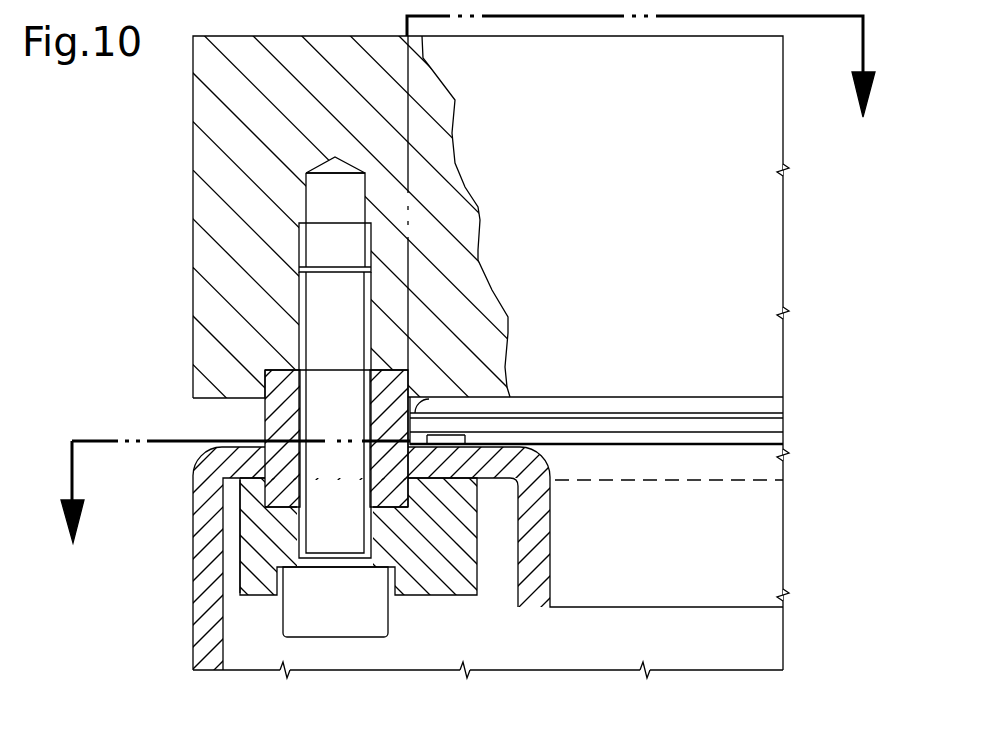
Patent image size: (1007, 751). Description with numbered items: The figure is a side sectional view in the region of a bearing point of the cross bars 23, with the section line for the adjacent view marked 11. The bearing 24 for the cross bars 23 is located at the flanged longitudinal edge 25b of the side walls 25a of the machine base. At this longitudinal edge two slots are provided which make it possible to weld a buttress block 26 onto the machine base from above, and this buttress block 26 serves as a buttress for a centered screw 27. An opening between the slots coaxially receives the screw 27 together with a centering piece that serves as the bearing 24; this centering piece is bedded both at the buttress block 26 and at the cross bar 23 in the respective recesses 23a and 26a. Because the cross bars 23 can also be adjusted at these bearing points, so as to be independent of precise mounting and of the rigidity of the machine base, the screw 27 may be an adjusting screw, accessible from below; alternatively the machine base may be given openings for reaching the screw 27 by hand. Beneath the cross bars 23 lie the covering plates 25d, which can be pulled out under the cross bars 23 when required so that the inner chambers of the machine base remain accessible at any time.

The section line XI-XI 11 is at (472, 297).
The cross bars 23 is at (503, 375).
The recess 23a is at (243, 350).
The bearing 24 is at (503, 375).
The side walls 25a is at (503, 375).
The flanged longitudinal edge 25b is at (596, 378).
The covering plates 25d is at (650, 438).
The buttress block 26 is at (408, 375).
The recess 26a is at (276, 613).
The screw 27 is at (446, 395).